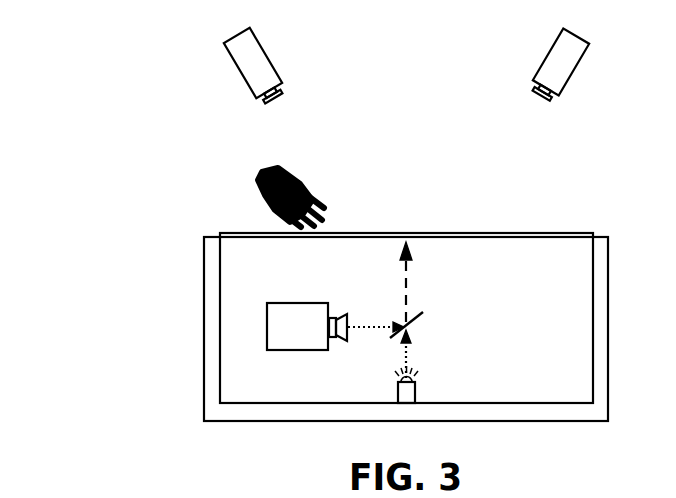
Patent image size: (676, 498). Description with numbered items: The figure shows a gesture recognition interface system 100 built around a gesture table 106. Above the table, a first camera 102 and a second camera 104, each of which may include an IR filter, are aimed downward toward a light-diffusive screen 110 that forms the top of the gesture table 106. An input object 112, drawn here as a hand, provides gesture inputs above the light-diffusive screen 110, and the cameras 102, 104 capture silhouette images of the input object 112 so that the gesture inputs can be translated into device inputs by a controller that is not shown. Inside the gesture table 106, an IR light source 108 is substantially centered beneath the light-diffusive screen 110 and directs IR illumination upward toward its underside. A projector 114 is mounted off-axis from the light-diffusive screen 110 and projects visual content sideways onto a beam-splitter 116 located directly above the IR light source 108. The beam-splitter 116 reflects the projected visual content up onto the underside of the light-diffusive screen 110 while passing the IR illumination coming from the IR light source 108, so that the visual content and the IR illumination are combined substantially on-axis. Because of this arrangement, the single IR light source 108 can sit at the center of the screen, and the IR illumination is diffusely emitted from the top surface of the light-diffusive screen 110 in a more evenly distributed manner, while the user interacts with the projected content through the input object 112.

The gesture recognition interface system 100 is at (93, 55).
The first camera 102 is at (263, 46).
The second camera 104 is at (534, 76).
The gesture table 106 is at (203, 295).
The IR light source 108 is at (397, 385).
The light-diffusive screen 110 is at (560, 233).
The input object 112 is at (298, 181).
The projector 114 is at (312, 302).
The beam-splitter 116 is at (418, 318).